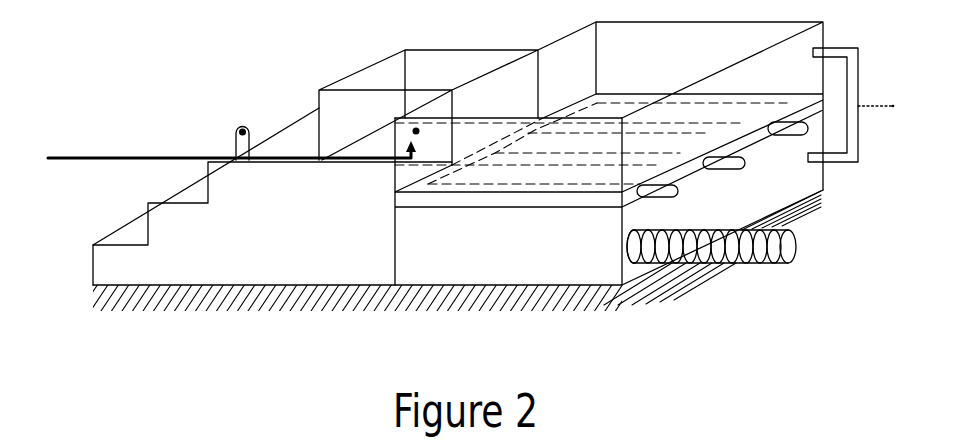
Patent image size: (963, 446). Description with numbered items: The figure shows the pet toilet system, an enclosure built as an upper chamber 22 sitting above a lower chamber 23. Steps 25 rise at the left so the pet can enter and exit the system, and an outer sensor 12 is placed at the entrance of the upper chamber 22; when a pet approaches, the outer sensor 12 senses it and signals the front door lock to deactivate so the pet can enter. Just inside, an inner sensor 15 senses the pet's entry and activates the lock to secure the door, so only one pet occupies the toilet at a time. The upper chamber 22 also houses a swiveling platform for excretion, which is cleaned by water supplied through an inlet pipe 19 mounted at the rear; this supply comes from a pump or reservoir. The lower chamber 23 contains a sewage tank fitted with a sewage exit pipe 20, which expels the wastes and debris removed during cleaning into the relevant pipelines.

The outer sensor 12 is at (242, 125).
The inner sensor 15 is at (215, 151).
The inlet pipe 19 is at (866, 148).
The sewage exit pipe 20 is at (810, 252).
The upper chamber 22 is at (609, 114).
The lower chamber 23 is at (508, 201).
The steps 25 is at (86, 252).